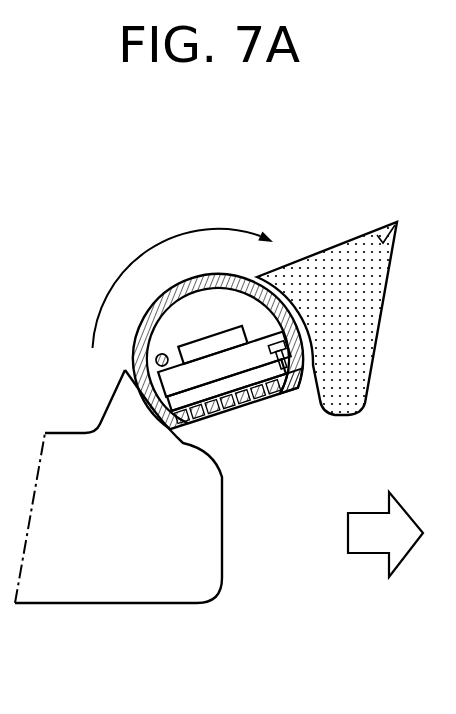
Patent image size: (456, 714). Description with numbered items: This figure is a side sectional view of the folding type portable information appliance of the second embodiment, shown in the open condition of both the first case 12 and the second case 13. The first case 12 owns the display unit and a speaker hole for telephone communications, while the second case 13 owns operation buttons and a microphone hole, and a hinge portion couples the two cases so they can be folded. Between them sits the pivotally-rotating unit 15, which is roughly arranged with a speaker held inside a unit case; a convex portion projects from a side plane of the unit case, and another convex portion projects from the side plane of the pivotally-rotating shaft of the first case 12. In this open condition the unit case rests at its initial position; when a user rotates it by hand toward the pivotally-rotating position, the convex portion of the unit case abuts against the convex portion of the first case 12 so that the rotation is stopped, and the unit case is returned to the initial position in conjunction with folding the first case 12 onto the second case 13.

The first case 12 is at (349, 254).
The second case 13 is at (116, 576).
The pivotally-rotating unit 15 is at (211, 258).